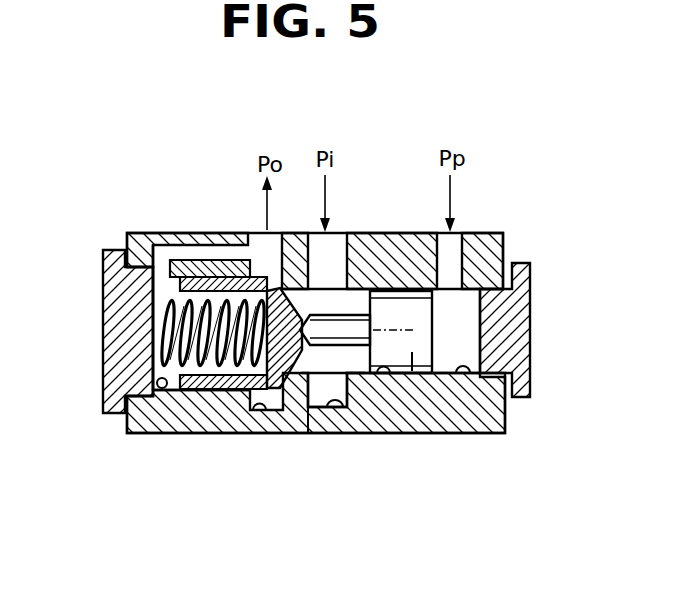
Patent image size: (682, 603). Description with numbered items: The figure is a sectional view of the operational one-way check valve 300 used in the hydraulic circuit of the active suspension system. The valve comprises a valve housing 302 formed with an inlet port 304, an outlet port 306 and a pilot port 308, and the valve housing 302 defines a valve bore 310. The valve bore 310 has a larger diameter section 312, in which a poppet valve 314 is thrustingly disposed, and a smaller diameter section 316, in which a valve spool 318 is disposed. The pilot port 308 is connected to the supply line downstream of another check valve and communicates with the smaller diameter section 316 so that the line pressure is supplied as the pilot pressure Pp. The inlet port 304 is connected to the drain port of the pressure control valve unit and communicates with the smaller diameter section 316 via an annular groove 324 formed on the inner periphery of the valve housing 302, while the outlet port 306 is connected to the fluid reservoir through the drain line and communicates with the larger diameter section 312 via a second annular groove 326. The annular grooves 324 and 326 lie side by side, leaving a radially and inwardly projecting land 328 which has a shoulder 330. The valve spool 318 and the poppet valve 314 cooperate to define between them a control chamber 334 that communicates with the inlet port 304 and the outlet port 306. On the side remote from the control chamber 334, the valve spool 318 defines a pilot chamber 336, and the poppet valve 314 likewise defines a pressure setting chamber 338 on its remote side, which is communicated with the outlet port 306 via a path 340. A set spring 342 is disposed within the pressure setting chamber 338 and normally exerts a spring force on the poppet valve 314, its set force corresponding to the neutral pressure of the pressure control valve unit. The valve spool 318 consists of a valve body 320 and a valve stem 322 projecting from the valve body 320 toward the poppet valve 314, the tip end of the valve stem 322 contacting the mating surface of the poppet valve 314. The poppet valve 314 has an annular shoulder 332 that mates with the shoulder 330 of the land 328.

The operational one-way check valve 300 is at (527, 252).
The valve housing 302 is at (142, 233).
The inlet port 304 is at (337, 233).
The outlet port 306 is at (251, 233).
The pilot port 308 is at (458, 233).
The valve bore 310 is at (378, 373).
The larger diameter section 312 is at (153, 438).
The poppet valve 314 is at (187, 437).
The smaller diameter section 316 is at (459, 377).
The valve spool 318 is at (413, 372).
The valve body 320 is at (420, 327).
The valve stem 322 is at (334, 346).
The annular groove 324 is at (351, 374).
The annular groove 326 is at (225, 437).
The land 328 is at (260, 437).
The shoulder 330 is at (279, 268).
The annular shoulder 332 is at (347, 286).
The control chamber 334 is at (297, 437).
The pilot chamber 336 is at (470, 341).
The pressure setting chamber 338 is at (173, 322).
The path 340 is at (188, 250).
The set spring 342 is at (165, 355).